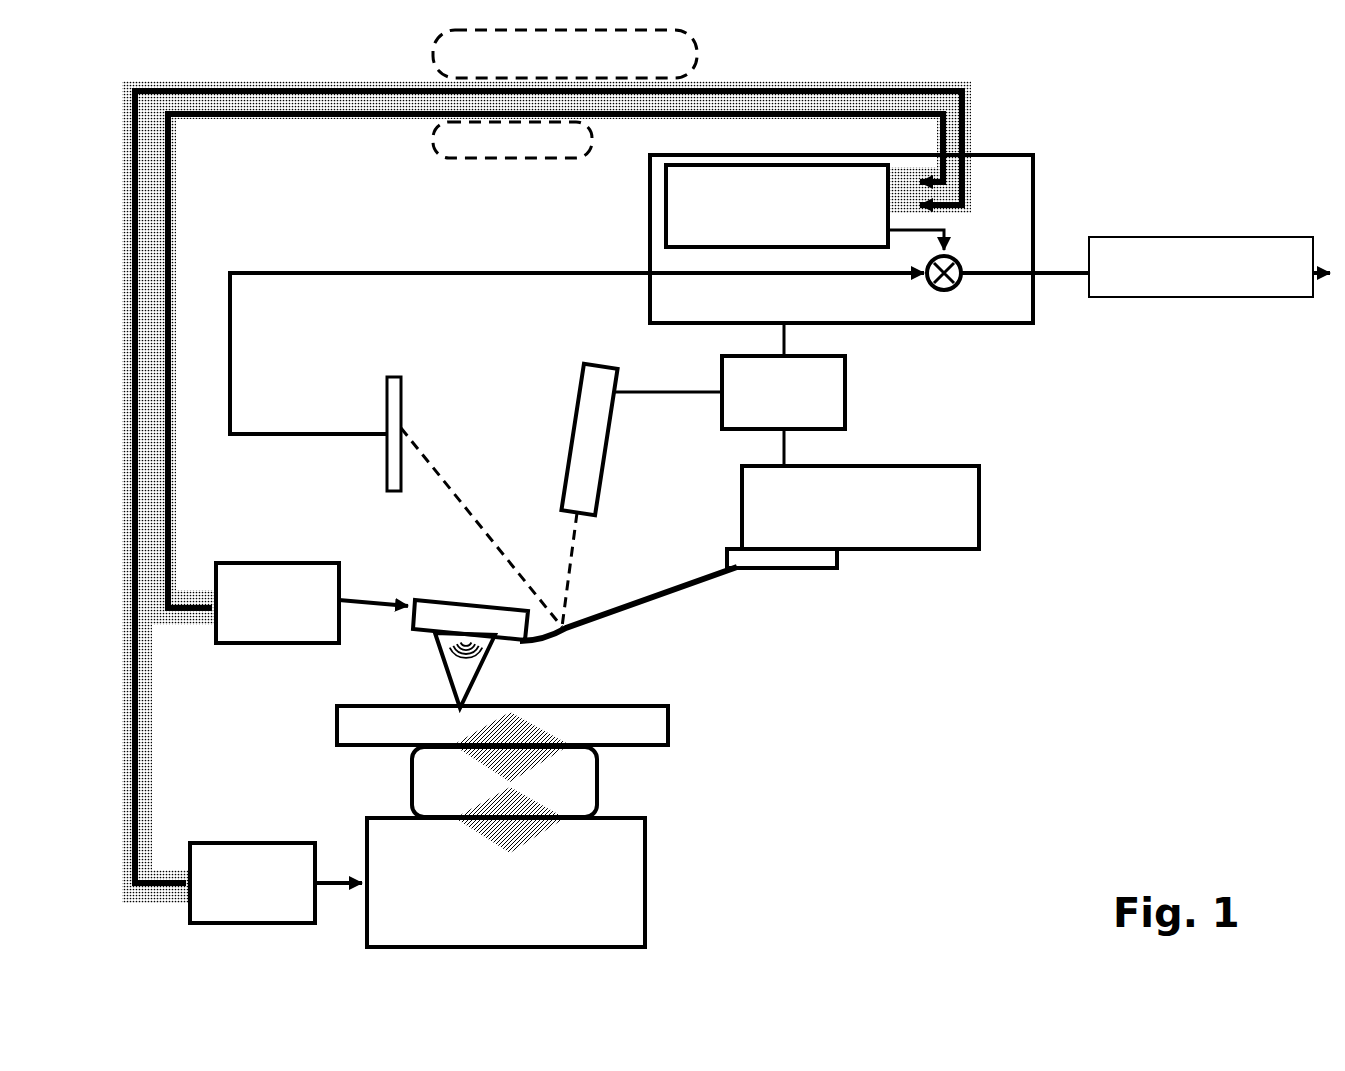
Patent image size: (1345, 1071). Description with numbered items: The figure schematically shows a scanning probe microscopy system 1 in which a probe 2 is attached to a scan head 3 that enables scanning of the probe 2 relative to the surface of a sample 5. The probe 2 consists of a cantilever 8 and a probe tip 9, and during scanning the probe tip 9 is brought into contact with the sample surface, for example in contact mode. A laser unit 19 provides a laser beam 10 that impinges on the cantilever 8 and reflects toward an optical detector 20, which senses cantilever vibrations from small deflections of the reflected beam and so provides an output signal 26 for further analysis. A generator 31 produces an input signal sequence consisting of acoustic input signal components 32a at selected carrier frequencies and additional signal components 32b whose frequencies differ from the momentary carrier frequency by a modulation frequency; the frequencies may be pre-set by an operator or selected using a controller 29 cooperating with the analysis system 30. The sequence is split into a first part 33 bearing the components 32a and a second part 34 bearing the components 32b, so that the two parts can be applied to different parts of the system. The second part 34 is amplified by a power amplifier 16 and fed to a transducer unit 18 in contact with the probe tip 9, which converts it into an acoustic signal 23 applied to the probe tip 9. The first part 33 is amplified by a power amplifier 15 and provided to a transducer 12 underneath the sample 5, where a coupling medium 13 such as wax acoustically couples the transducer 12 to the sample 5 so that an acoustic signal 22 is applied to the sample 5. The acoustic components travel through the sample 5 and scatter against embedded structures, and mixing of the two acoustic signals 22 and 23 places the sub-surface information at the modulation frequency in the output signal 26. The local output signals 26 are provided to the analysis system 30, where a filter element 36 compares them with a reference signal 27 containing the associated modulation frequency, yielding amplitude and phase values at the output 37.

The scanning probe microscopy system 1 is at (1032, 650).
The probe 2 is at (643, 598).
The scan head 3 is at (979, 508).
The sample 5 is at (668, 725).
The cantilever 8 is at (703, 590).
The probe tip 9 is at (445, 680).
The laser beam 10 is at (480, 520).
The transducer 12 is at (645, 880).
The coupling medium 13 is at (597, 783).
The power amplifier 15 is at (265, 843).
The power amplifier 16 is at (262, 562).
The transducer unit 18 is at (443, 600).
The laser unit 19 is at (607, 435).
The optical detector 20 is at (401, 385).
The acoustic signal 22 is at (543, 735).
The acoustic signal 23 is at (483, 668).
The output signal 26 is at (310, 432).
The reference signal 27 is at (948, 232).
The controller 29 is at (845, 395).
The analysis system 30 is at (985, 330).
The generator 31 is at (730, 165).
The acoustic input signal components 32a is at (697, 52).
The additional signal components 32b is at (482, 158).
The first part 33 is at (405, 92).
The second part 34 is at (402, 120).
The filter element 36 is at (933, 290).
The output 37 is at (1150, 300).